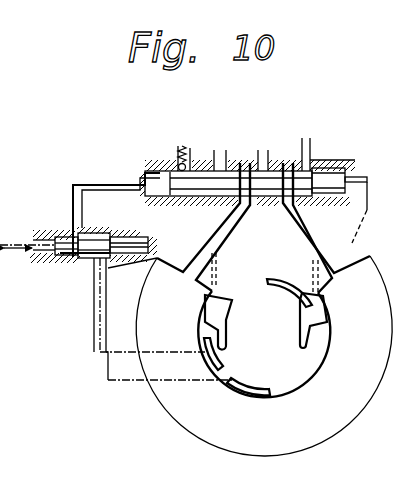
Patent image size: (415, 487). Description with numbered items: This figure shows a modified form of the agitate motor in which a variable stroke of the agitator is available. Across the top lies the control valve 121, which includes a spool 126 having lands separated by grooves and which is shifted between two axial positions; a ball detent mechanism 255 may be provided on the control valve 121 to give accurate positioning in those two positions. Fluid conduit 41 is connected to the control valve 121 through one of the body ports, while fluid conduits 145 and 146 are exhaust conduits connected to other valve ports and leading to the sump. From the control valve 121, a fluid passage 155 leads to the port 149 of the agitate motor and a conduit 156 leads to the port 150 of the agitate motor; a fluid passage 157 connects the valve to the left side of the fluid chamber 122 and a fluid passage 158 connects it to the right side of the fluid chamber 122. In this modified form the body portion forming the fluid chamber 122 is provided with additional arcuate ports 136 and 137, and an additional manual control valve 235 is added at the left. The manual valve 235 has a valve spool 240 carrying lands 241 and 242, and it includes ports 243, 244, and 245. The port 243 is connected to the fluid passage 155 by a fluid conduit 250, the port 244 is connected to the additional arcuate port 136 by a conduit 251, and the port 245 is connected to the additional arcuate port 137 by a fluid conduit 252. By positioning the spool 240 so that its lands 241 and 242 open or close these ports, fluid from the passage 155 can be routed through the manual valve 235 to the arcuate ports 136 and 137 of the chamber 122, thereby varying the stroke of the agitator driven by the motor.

The fluid conduit 41 is at (262, 150).
The control valve 121 is at (331, 154).
The fluid chamber 122 is at (352, 419).
The spool 126 is at (338, 166).
The arcuate port 136 is at (222, 362).
The arcuate port 137 is at (264, 395).
The fluid conduit 145 is at (220, 150).
The fluid conduit 146 is at (304, 138).
The port 149 is at (227, 330).
The port 150 is at (302, 340).
The fluid passage 155 is at (226, 194).
The conduit 156 is at (352, 241).
The fluid passage 157 is at (222, 242).
The fluid passage 158 is at (339, 247).
The manual control valve 235 is at (74, 182).
The valve spool 240 is at (39, 239).
The land 241 is at (70, 258).
The land 242 is at (121, 234).
The port 243 is at (67, 235).
The port 244 is at (92, 270).
The port 245 is at (141, 271).
The fluid conduit 250 is at (93, 184).
The conduit 251 is at (94, 352).
The fluid conduit 252 is at (119, 382).
The ball detent mechanism 255 is at (182, 143).